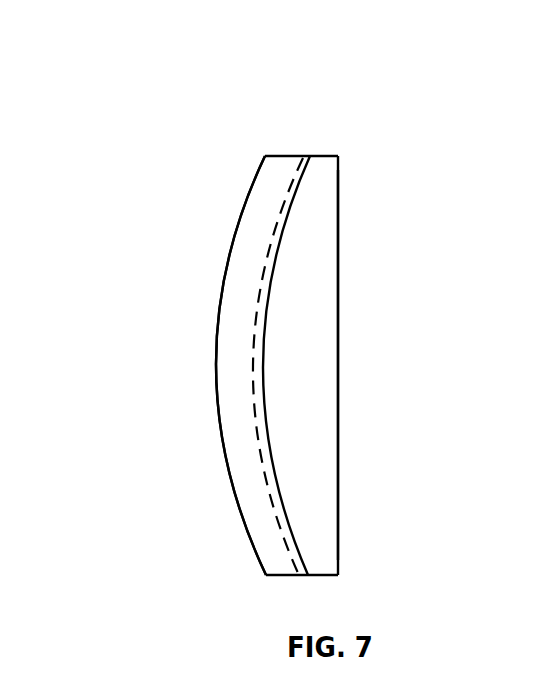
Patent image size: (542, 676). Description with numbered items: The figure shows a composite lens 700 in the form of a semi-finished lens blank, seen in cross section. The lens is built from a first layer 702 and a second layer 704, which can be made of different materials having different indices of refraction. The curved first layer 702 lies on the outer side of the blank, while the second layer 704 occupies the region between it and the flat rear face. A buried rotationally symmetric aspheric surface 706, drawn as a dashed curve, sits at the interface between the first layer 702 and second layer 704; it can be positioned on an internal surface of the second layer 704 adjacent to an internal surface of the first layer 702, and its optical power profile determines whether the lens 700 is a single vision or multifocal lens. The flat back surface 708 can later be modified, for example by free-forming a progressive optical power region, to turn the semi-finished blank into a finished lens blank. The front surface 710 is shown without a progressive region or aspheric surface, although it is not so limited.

The composite lens 700 is at (93, 83).
The first layer 702 is at (278, 170).
The second layer 704 is at (325, 170).
The buried rotationally symmetric aspheric surface 706 is at (252, 390).
The back surface 708 is at (340, 411).
The front surface 710 is at (226, 471).